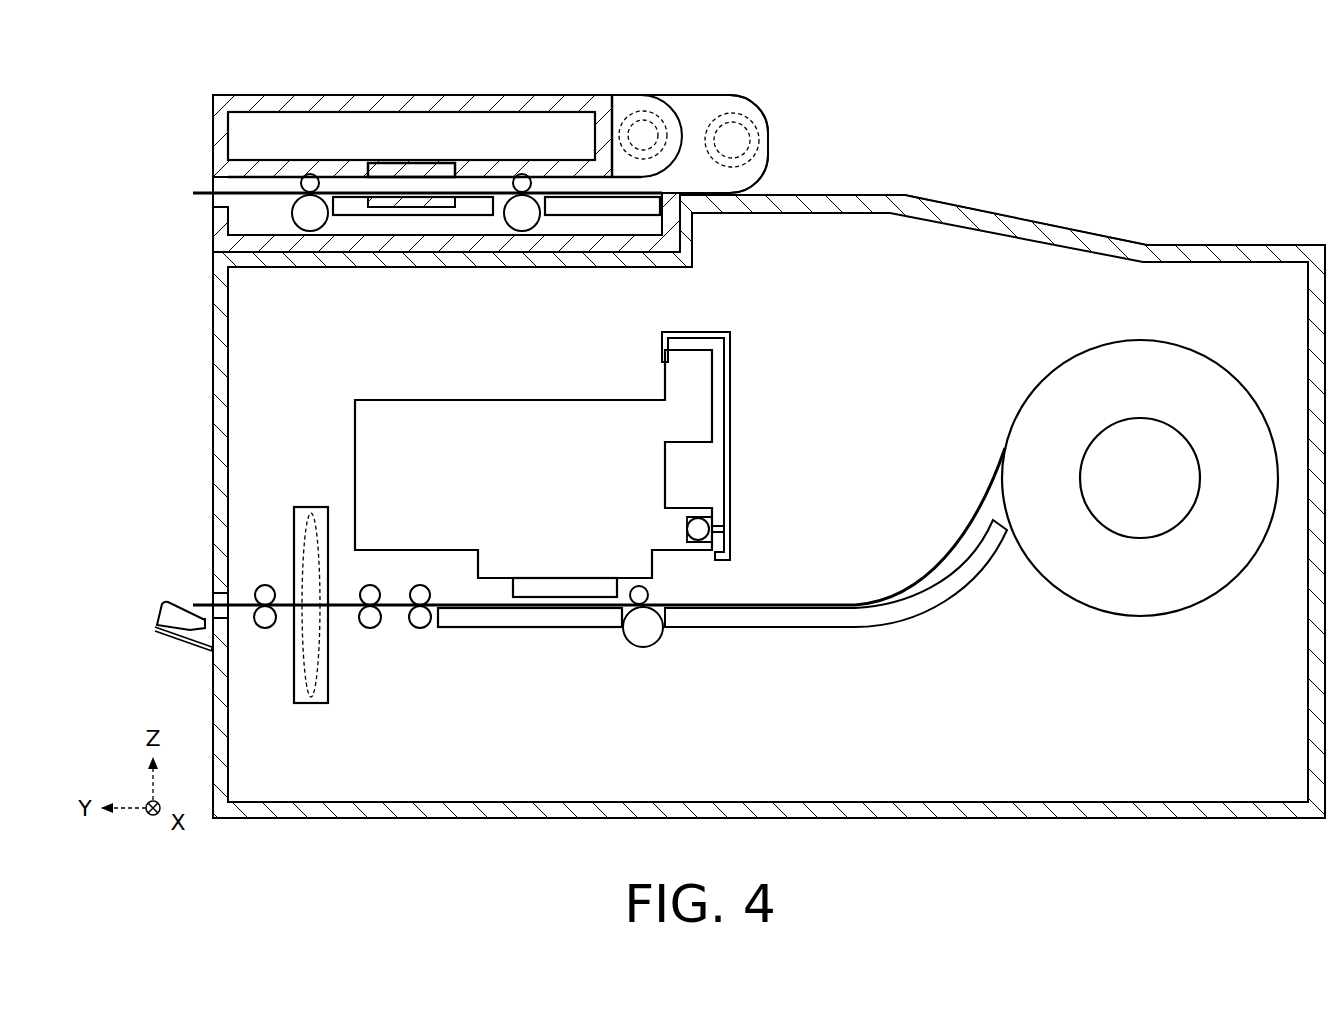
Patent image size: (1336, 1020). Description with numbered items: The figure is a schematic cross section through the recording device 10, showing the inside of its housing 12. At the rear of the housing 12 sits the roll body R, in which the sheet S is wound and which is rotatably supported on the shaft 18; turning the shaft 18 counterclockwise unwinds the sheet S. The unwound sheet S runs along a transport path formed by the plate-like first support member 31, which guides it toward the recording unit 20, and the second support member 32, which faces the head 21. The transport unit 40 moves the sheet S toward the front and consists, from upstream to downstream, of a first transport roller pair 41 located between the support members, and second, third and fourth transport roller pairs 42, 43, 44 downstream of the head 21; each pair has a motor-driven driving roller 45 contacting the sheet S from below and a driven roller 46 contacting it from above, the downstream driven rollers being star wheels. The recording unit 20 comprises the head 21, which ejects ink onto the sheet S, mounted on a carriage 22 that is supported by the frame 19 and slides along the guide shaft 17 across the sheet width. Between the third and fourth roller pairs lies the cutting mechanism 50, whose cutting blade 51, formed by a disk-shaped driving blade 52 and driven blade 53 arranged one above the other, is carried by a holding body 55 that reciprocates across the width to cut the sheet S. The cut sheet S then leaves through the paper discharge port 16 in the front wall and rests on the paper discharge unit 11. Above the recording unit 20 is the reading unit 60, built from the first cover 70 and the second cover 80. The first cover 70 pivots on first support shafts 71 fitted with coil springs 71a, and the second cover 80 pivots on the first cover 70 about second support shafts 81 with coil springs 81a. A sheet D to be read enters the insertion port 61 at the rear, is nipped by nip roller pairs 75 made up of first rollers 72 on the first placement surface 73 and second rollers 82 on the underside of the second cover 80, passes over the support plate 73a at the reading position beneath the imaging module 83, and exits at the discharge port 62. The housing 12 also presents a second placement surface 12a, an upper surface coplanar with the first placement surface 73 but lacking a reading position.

The recording device 10 is at (126, 104).
The paper discharge unit 11 is at (183, 634).
The housing 12 is at (1090, 238).
The second placement surface 12a is at (905, 196).
The paper discharge port 16 is at (207, 596).
The guide shaft 17 is at (700, 517).
The shaft 18 is at (1118, 419).
The frame 19 is at (732, 396).
The recording unit 20 is at (571, 439).
The head 21 is at (503, 577).
The carriage 22 is at (487, 399).
The first support member 31 is at (883, 629).
The second support member 32 is at (490, 629).
The transport unit 40 is at (474, 647).
The first transport roller pair 41 is at (669, 642).
The second transport roller pair 42 is at (430, 644).
The third transport roller pair 43 is at (380, 644).
The fourth transport roller pair 44 is at (272, 640).
The driving roller 45 is at (262, 629).
The driven roller 46 is at (265, 584).
The cutting mechanism 50 is at (300, 614).
The cutting blade 51 is at (334, 737).
The driving blade 52 is at (311, 704).
The driven blade 53 is at (312, 506).
The holding body 55 is at (292, 516).
The reading unit 60 is at (459, 102).
The insertion port 61 is at (650, 186).
The discharge port 62 is at (208, 184).
The first cover 70 is at (404, 263).
The first support shaft 71 is at (765, 120).
The coil spring 71a is at (735, 113).
The first roller 72 is at (306, 174).
The first placement surface 73 is at (352, 217).
The support plate 73a is at (402, 209).
The nip roller pair 75 is at (423, 116).
The second cover 80 is at (213, 133).
The second support shaft 81 is at (666, 118).
The coil spring 81a is at (645, 112).
The second roller 82 is at (320, 178).
The imaging module 83 is at (410, 164).
The sheet D is at (252, 178).
The sheet S is at (920, 562).
The roll body R is at (1135, 618).